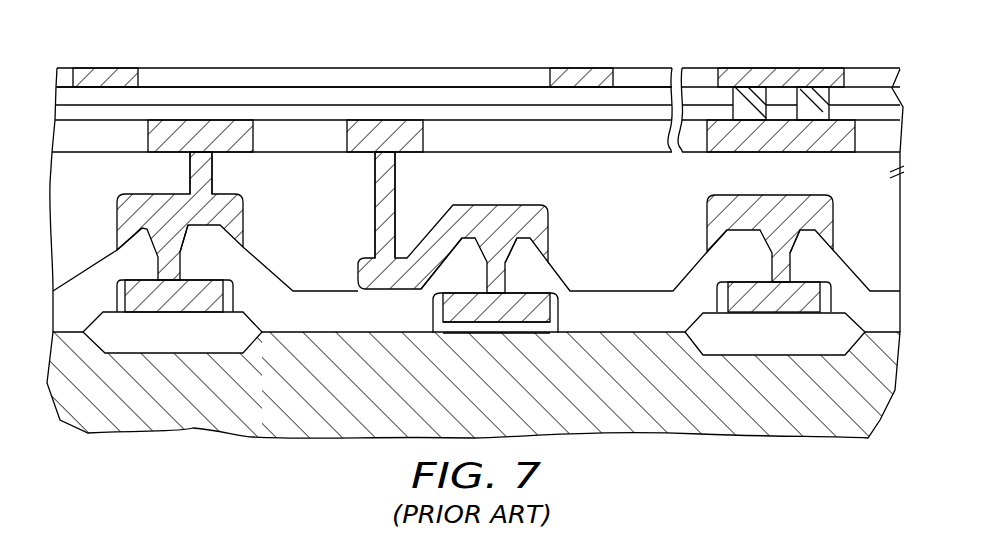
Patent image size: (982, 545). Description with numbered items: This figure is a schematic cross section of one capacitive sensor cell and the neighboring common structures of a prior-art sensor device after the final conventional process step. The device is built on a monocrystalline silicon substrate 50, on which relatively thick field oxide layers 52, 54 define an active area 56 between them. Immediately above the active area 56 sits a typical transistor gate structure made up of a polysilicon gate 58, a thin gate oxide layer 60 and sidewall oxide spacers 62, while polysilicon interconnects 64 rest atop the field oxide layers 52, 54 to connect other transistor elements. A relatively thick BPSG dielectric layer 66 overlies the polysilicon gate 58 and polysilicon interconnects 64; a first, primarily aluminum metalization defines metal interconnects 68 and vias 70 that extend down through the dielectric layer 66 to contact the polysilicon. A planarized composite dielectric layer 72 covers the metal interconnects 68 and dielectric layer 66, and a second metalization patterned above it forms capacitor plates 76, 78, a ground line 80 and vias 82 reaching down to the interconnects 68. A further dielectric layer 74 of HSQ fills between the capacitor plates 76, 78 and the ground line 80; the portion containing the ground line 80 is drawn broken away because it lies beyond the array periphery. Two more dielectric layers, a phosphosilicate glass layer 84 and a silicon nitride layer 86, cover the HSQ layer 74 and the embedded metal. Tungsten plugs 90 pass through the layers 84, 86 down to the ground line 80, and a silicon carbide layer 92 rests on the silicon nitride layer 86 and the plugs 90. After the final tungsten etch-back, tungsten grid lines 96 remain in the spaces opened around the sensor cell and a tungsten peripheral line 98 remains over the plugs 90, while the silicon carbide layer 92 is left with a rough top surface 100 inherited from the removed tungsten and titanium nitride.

The monocrystalline silicon substrate 50 is at (280, 432).
The field oxide layer 52 is at (172, 332).
The field oxide layer 54 is at (775, 334).
The active area 56 is at (347, 386).
The polysilicon gate 58 is at (512, 322).
The thin gate oxide layer 60 is at (480, 330).
The sidewall oxide spacers 62 is at (553, 322).
The polysilicon interconnects 64 is at (196, 282).
The dielectric layer 66 is at (653, 313).
The metal interconnects 68 is at (240, 228).
The vias 70 is at (163, 268).
The planarized dielectric layer 72 is at (476, 243).
The dielectric layer 74 is at (97, 147).
The capacitor plate 76 is at (241, 147).
The capacitor plate 78 is at (364, 147).
The ground line 80 is at (722, 147).
The vias 82 is at (192, 163).
The phosphosilicate glass layer 84 is at (507, 117).
The silicon nitride layer 86 is at (555, 98).
The tungsten plugs 90 is at (745, 95).
The silicon carbide layer 92 is at (275, 72).
The tungsten grid lines 96 is at (107, 74).
The tungsten peripheral line 98 is at (778, 76).
The rough top surface 100 is at (402, 67).